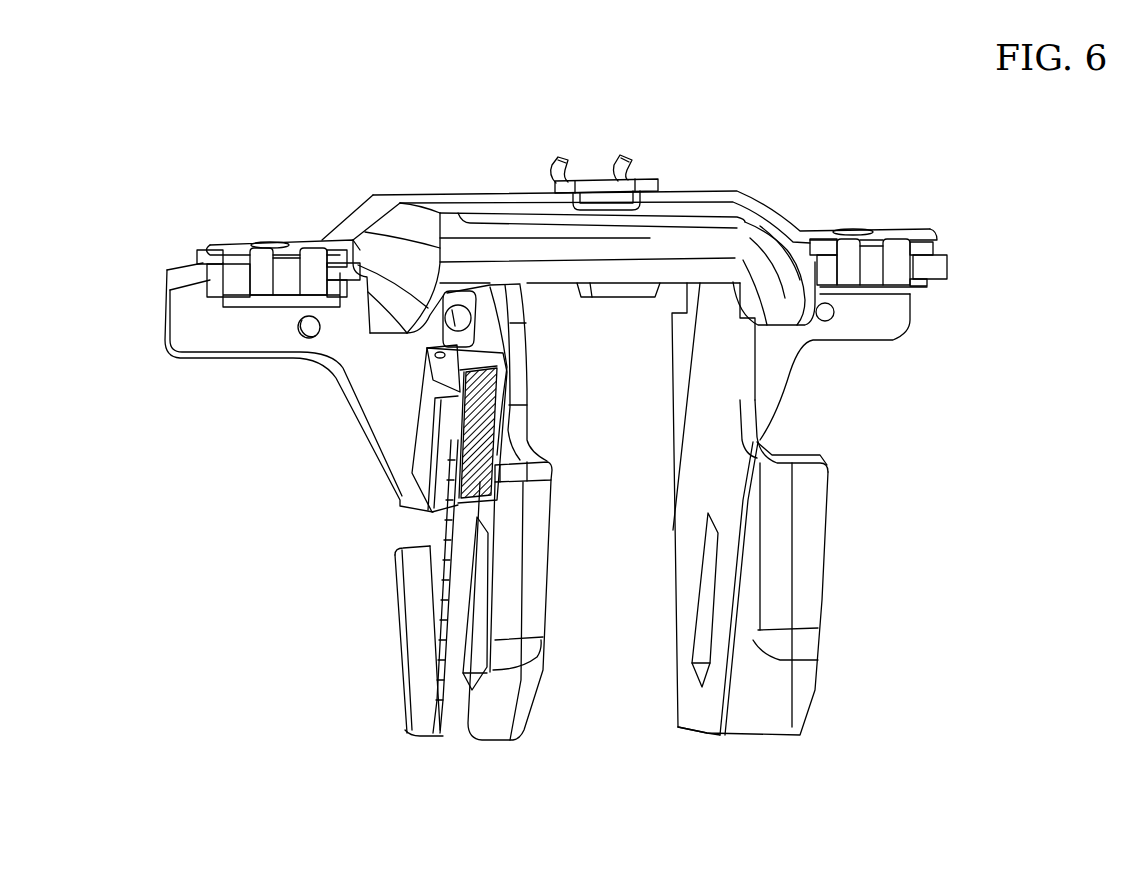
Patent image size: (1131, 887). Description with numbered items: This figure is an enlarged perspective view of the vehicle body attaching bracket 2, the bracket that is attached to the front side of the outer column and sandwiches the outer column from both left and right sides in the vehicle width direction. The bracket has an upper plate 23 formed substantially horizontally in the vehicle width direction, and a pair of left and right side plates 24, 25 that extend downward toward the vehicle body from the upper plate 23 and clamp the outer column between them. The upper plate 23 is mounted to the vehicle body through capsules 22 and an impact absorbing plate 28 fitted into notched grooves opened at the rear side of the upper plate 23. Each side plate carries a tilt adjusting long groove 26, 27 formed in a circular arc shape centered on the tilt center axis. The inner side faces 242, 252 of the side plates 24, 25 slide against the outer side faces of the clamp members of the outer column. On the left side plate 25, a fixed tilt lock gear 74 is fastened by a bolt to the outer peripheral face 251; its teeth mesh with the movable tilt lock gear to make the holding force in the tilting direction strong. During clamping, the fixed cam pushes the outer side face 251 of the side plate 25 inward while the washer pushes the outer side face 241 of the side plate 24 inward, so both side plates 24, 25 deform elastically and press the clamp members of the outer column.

The vehicle body attaching bracket 2 is at (600, 143).
The capsule 22 is at (279, 302).
The upper plate 23 is at (464, 222).
The side plate 24 is at (738, 533).
The side plate 25 is at (457, 540).
The tilt adjusting long groove 26 is at (700, 602).
The tilt adjusting long groove 27 is at (476, 597).
The impact absorbing plate 28 is at (762, 215).
The fixed tilt lock gear 74 is at (427, 442).
The outer side face 241 is at (757, 413).
The inner side face 242 is at (703, 715).
The outer side face 251 is at (457, 707).
The inner side face 252 is at (527, 712).